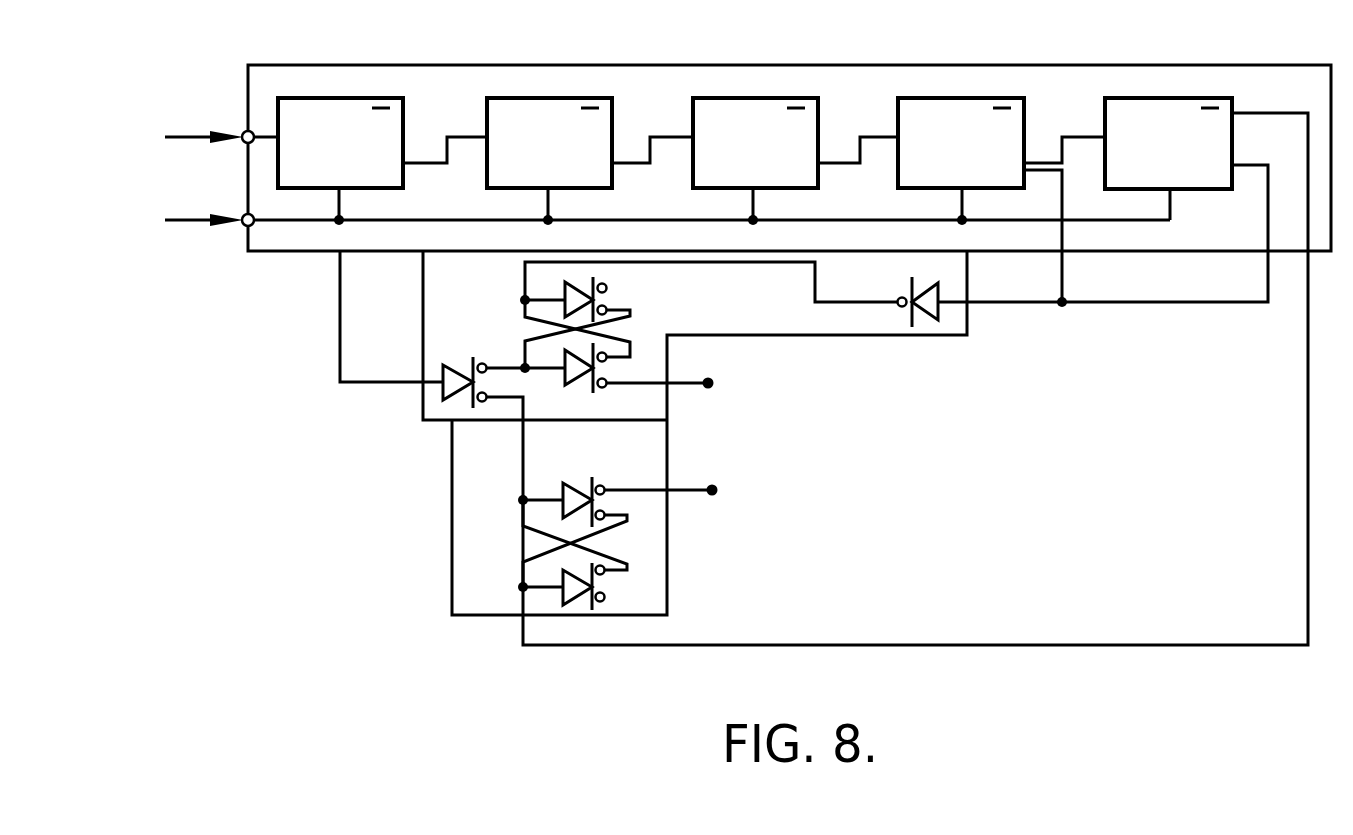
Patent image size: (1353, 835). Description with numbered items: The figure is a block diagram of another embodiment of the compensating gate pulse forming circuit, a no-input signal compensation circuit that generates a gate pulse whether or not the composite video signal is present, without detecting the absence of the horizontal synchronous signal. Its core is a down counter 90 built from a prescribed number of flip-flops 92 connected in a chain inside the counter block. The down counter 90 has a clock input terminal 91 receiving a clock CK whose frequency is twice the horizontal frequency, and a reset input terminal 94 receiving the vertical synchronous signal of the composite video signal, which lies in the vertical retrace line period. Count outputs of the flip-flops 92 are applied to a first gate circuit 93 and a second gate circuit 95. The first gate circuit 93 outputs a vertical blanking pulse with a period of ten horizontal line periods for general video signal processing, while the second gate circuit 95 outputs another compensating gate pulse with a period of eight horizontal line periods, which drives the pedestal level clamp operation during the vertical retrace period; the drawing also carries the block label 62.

The down counter 90 is at (757, 65).
The clock input terminal 91 is at (245, 130).
The flip-flops 92 is at (403, 104).
The first gate circuit 93 is at (800, 322).
The reset input terminal 94 is at (246, 227).
The second gate circuit 95 is at (668, 552).
The decoding circuit block 62 is at (1102, 470).